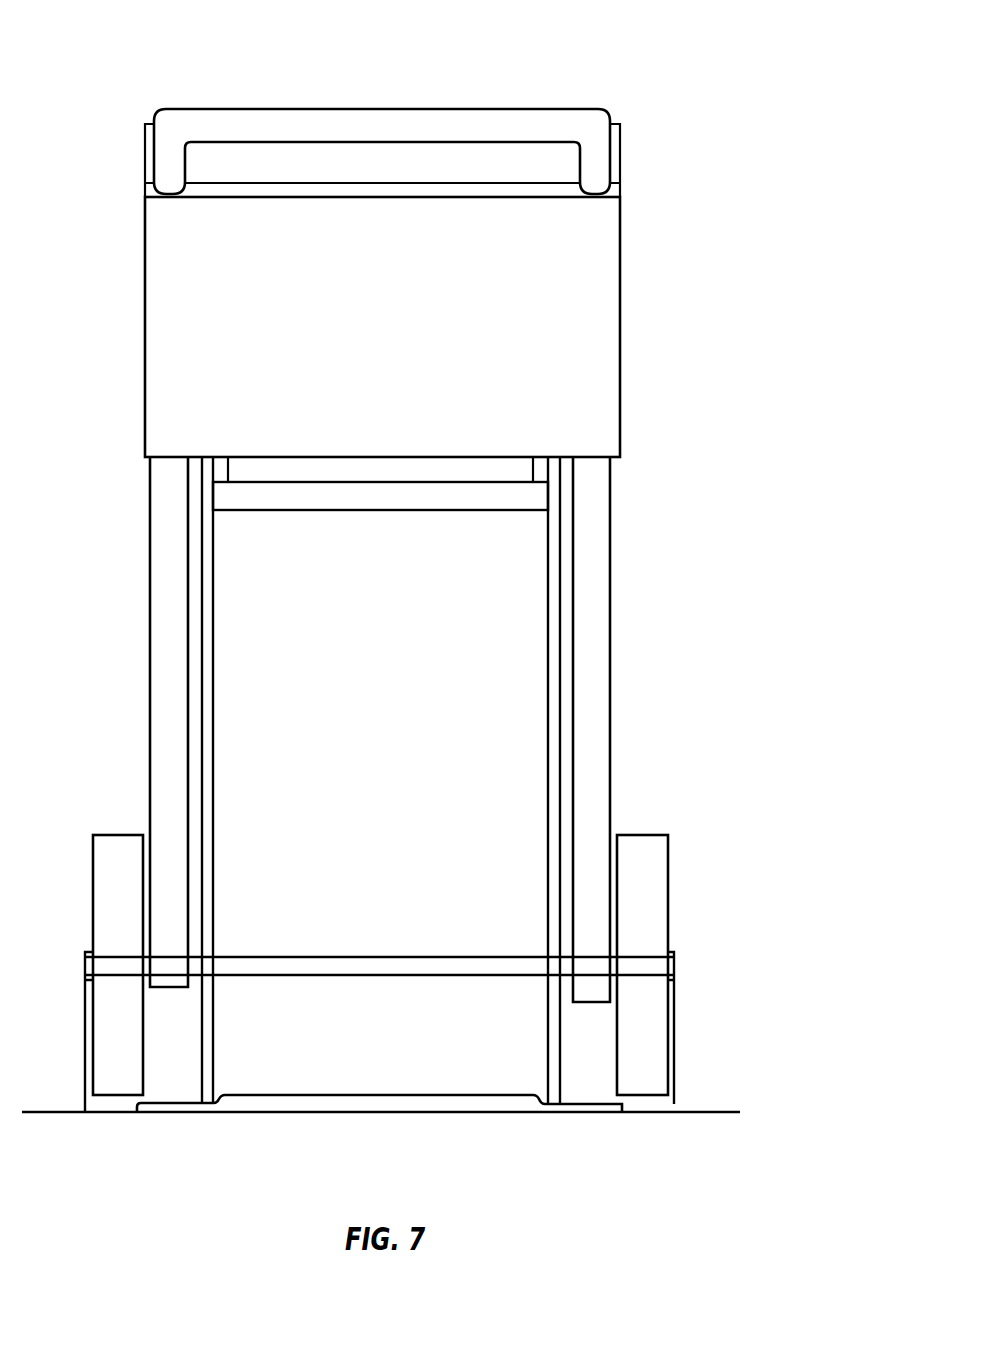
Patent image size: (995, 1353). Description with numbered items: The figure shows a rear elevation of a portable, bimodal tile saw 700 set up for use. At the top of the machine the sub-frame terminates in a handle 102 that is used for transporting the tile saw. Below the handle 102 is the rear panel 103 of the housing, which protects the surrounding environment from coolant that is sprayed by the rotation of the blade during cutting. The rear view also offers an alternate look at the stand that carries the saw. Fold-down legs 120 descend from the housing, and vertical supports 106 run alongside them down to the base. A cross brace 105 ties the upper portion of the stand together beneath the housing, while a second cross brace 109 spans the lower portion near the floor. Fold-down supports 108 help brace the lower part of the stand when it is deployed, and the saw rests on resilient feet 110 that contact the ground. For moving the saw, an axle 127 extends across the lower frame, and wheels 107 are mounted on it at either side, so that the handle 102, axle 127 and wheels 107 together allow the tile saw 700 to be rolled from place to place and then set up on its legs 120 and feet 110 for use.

The cart assembly 700 is at (513, 53).
The handle 102 is at (583, 110).
The rear panel 103 is at (602, 330).
The cross brace 105 is at (380, 510).
The fold-down legs 120 is at (612, 589).
The vertical supports 106 is at (550, 739).
The wheels 107 is at (653, 833).
The axle 127 is at (383, 952).
The fold-down supports 108 is at (558, 1065).
The cross brace 109 is at (383, 1095).
The resilient feet 110 is at (583, 1112).